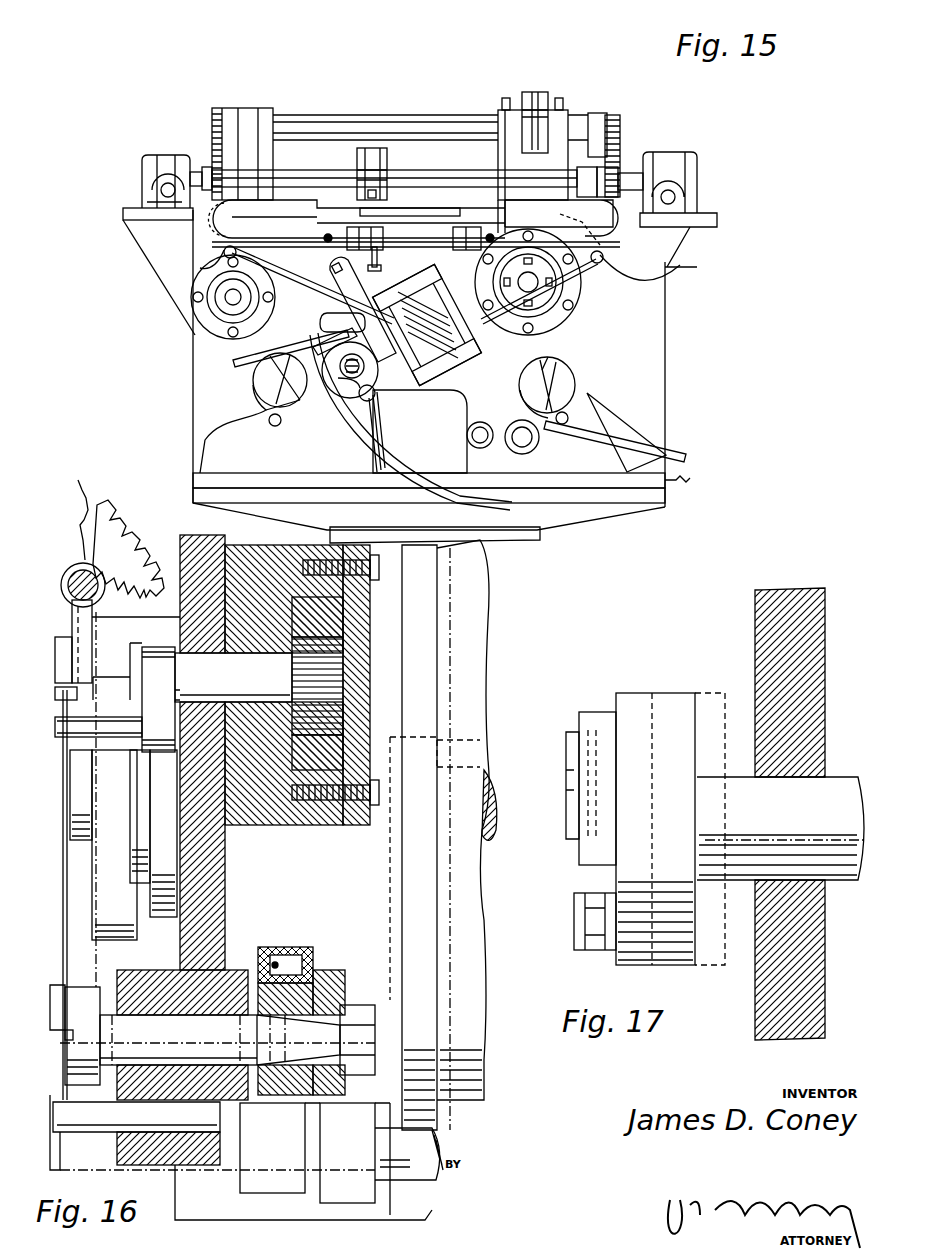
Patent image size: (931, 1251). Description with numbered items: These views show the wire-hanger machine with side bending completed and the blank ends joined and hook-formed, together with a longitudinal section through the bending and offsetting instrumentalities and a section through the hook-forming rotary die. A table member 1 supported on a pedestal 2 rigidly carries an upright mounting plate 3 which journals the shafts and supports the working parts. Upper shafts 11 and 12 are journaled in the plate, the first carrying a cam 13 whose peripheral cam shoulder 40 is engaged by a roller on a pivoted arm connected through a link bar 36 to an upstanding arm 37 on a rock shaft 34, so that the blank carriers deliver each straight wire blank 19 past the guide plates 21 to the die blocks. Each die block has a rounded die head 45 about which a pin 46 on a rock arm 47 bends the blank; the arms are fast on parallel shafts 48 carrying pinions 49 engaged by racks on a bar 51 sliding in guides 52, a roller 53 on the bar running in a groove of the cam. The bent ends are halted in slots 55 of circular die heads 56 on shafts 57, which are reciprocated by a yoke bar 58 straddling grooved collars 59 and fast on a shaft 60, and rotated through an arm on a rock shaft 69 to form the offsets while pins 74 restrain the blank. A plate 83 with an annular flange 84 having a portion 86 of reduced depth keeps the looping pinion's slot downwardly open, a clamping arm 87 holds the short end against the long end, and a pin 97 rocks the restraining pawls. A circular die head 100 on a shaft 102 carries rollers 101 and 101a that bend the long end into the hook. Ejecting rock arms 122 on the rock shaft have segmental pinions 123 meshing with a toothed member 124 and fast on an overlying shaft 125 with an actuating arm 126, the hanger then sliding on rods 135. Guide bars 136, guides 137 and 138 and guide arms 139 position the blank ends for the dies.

In FIG. 15, the table member 1 is at (682, 471).
In FIG. 15, the pedestal 2 is at (540, 540).
In FIG. 15, the mounting plate 3 is at (665, 348).
In FIG. 16, the mounting plate 3 is at (225, 955).
In FIG. 17, the mounting plate 3 is at (825, 668).
In FIG. 15, the shaft 11 is at (540, 282).
In FIG. 15, the shaft 12 is at (215, 305).
In FIG. 16, the cam 13 is at (487, 728).
In FIG. 15, the hanger-forming blank 19 is at (310, 280).
In FIG. 16, the hanger-forming blank 19 is at (60, 912).
In FIG. 15, the guide plate 21 is at (168, 160).
In FIG. 15, the rock shaft 34 is at (440, 176).
In FIG. 16, the rock shaft 34 is at (70, 570).
In FIG. 15, the link bar 36 is at (375, 150).
In FIG. 15, the upstanding arm 37 is at (395, 172).
In FIG. 16, the cam shoulder 40 is at (437, 668).
In FIG. 15, the rounded die head 45 is at (160, 250).
In FIG. 16, the rounded die head 45 is at (56, 720).
In FIG. 15, the pin 46 is at (218, 266).
In FIG. 16, the pin 46 is at (60, 748).
In FIG. 15, the rock arm 47 is at (238, 250).
In FIG. 16, the rock arm 47 is at (161, 699).
In FIG. 16, the shaft 48 is at (233, 677).
In FIG. 16, the pinion 49 is at (305, 672).
In FIG. 16, the bar 51 is at (330, 618).
In FIG. 16, the guide 52 is at (382, 662).
In FIG. 16, the roller 53 is at (450, 872).
In FIG. 15, the slot 55 is at (256, 387).
In FIG. 16, the slot 55 is at (78, 1010).
In FIG. 15, the circular die head 56 is at (300, 350).
In FIG. 16, the circular die head 56 is at (85, 980).
In FIG. 16, the shaft 57 is at (178, 1040).
In FIG. 16, the yoke bar 58 is at (330, 975).
In FIG. 16, the grooved collar 59 is at (345, 992).
In FIG. 15, the shaft 60 is at (482, 420).
In FIG. 15, the rock shaft 69 is at (530, 445).
In FIG. 16, the rock shaft 69 is at (438, 1148).
In FIG. 16, the pin 74 is at (98, 1135).
In FIG. 15, the plate 83 is at (560, 300).
In FIG. 16, the annular flange 84 is at (105, 875).
In FIG. 16, the portion of reduced depth 86 is at (135, 805).
In FIG. 15, the arm 87 is at (384, 272).
In FIG. 15, the pin 97 is at (380, 256).
In FIG. 15, the circular die head 100 is at (343, 398).
In FIG. 17, the circular die head 100 is at (668, 695).
In FIG. 15, the roller 101 is at (361, 394).
In FIG. 17, the roller 101 is at (576, 935).
In FIG. 15, the roller 101a is at (395, 398).
In FIG. 17, the roller 101a is at (604, 712).
In FIG. 17, the shaft 102 is at (845, 790).
In FIG. 15, the rock arm 122 is at (212, 222).
In FIG. 16, the rock arm 122 is at (82, 647).
In FIG. 15, the segmental pinion 123 is at (605, 160).
In FIG. 16, the segmental pinion 123 is at (84, 506).
In FIG. 15, the gear 124 is at (620, 128).
In FIG. 16, the gear 124 is at (138, 522).
In FIG. 15, the shaft 125 is at (460, 126).
In FIG. 15, the actuating arm 126 is at (548, 126).
In FIG. 15, the rod 135 is at (416, 247).
In FIG. 15, the guide bar 136 is at (470, 505).
In FIG. 15, the guide 137 is at (640, 412).
In FIG. 15, the guide 138 is at (686, 440).
In FIG. 15, the guide arm 139 is at (332, 334).